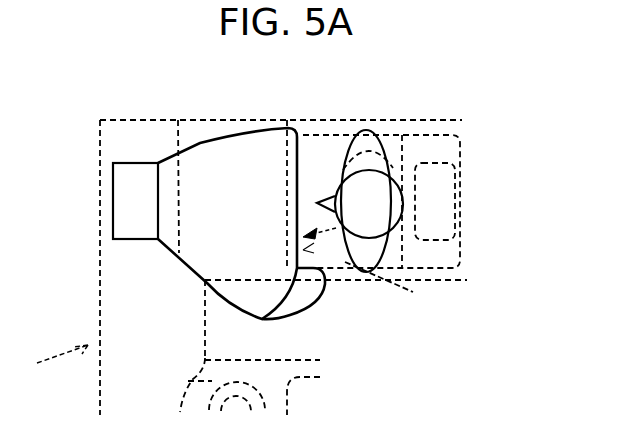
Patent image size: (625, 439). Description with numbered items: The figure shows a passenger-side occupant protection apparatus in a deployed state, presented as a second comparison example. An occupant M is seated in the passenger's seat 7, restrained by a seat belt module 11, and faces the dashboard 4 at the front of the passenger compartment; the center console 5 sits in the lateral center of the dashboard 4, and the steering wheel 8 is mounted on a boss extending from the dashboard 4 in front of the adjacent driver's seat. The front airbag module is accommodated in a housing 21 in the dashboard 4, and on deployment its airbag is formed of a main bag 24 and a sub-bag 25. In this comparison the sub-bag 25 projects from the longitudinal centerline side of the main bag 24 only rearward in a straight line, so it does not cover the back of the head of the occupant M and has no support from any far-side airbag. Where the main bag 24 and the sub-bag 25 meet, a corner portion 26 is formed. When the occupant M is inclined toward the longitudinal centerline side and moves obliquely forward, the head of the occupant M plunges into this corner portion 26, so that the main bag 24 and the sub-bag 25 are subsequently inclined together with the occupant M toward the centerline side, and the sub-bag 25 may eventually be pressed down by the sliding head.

The housing 21 is at (137, 198).
The main bag 24 is at (240, 165).
The occupant M is at (370, 188).
The seat belt module 11 is at (410, 122).
The passenger's seat 7 is at (458, 150).
The corner portion 26 is at (303, 250).
The sub-bag 25 is at (310, 292).
The dashboard 4 is at (140, 258).
The center console 5 is at (187, 303).
The steering wheel 8 is at (200, 380).